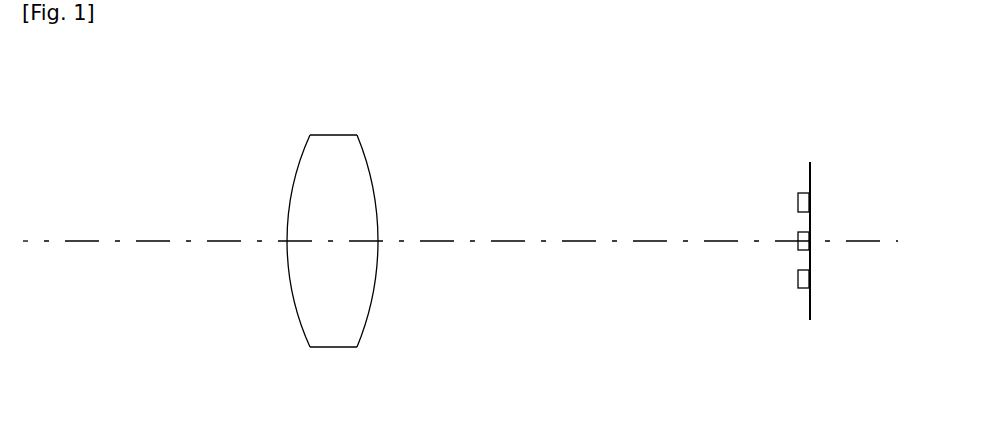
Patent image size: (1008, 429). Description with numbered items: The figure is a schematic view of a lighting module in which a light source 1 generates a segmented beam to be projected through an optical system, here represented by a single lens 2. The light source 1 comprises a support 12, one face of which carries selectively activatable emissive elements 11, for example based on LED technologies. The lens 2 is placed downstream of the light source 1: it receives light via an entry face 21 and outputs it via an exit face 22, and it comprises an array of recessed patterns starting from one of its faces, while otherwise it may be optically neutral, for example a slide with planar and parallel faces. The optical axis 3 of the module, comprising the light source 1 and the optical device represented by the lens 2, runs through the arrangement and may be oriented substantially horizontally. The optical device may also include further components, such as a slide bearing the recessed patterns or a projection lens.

The light source 1 is at (805, 211).
The selectively activatable emissive elements 11 is at (797, 200).
The support 12 is at (808, 172).
The lens 2 is at (331, 210).
The entry face 21 is at (370, 157).
The exit face 22 is at (295, 157).
The optical axis 3 is at (851, 240).